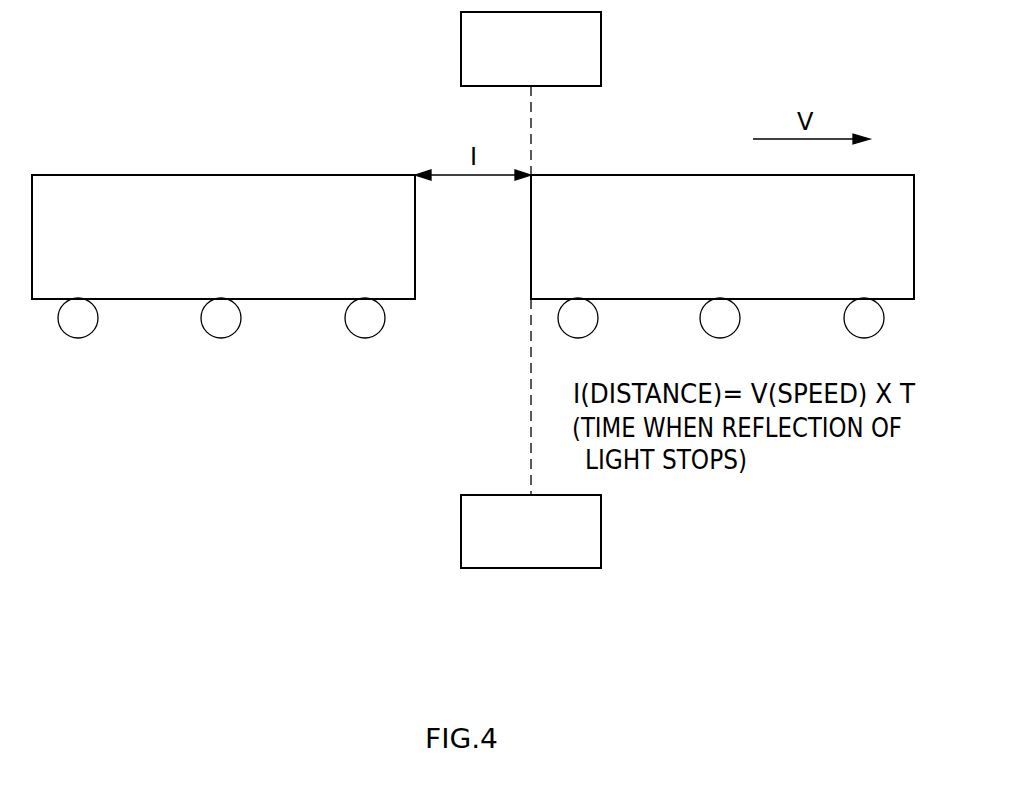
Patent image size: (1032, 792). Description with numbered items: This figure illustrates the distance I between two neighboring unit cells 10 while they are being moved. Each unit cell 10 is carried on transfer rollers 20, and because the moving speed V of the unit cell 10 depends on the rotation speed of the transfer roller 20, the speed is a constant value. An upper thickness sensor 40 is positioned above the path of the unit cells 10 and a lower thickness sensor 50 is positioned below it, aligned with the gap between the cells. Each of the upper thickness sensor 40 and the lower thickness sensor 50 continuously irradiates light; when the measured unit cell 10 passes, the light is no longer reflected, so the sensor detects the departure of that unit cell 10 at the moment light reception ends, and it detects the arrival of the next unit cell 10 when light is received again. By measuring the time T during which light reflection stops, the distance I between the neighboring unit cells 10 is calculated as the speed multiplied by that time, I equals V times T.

The unit cell 10 is at (225, 183).
The transfer roller 20 is at (77, 330).
The upper thickness sensor 40 is at (461, 47).
The lower thickness sensor 50 is at (461, 530).